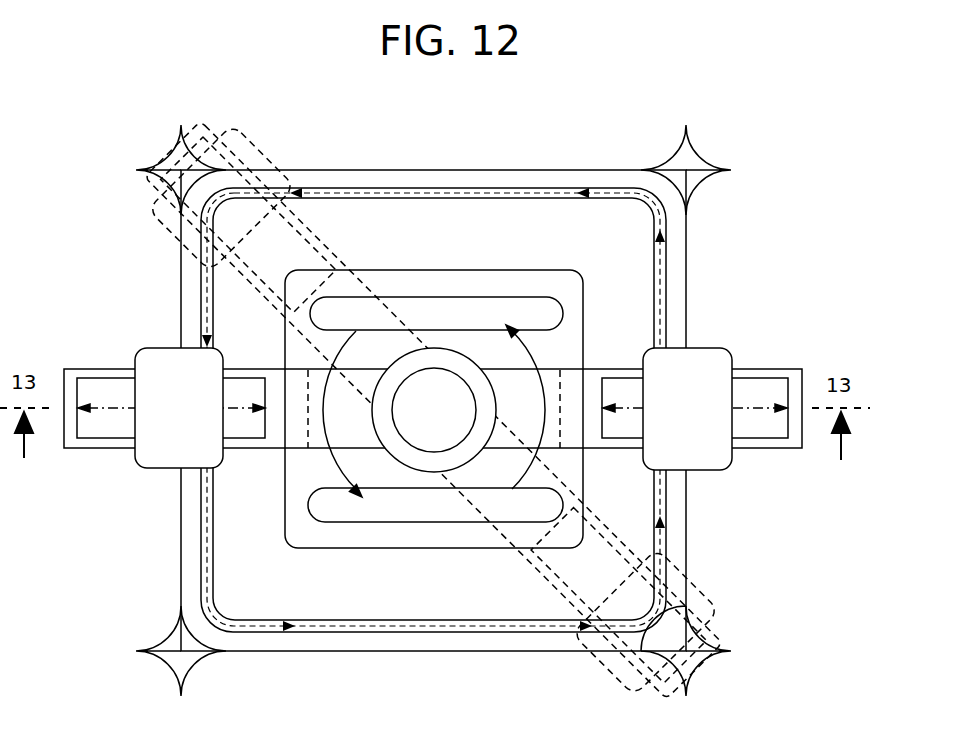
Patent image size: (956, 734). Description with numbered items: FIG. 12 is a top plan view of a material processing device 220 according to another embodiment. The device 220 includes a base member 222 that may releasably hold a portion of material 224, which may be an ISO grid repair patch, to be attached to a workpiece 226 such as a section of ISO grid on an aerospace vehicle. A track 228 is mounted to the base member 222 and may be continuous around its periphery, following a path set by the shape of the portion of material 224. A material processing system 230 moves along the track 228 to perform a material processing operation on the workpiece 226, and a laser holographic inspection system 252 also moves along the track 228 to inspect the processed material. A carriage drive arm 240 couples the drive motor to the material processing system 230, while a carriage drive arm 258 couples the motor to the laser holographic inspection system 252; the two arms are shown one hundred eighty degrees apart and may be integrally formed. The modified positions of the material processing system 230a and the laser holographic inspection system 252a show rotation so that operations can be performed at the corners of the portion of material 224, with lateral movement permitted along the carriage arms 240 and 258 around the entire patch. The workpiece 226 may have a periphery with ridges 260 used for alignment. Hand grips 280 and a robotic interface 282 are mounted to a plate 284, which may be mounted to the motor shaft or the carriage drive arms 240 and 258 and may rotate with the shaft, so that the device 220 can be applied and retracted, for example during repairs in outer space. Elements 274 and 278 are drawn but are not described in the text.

The material processing device 220 is at (760, 204).
The base member 222 is at (418, 210).
The portion of material 224 is at (367, 172).
The workpiece 226 is at (568, 152).
The track 228 is at (200, 522).
The material processing system 230 is at (145, 348).
The material processing system in modified position 230a is at (152, 233).
The carriage drive arm 240 is at (277, 382).
The laser holographic inspection system 252 is at (705, 350).
The laser holographic inspection system in modified position 252a is at (707, 590).
The carriage drive arm 258 is at (592, 378).
The ridges 260 is at (184, 127).
The opening 274 is at (237, 432).
The opening 278 is at (637, 432).
The hand grips 280 is at (527, 305).
The robotic interface 282 is at (450, 387).
The plate 284 is at (453, 277).